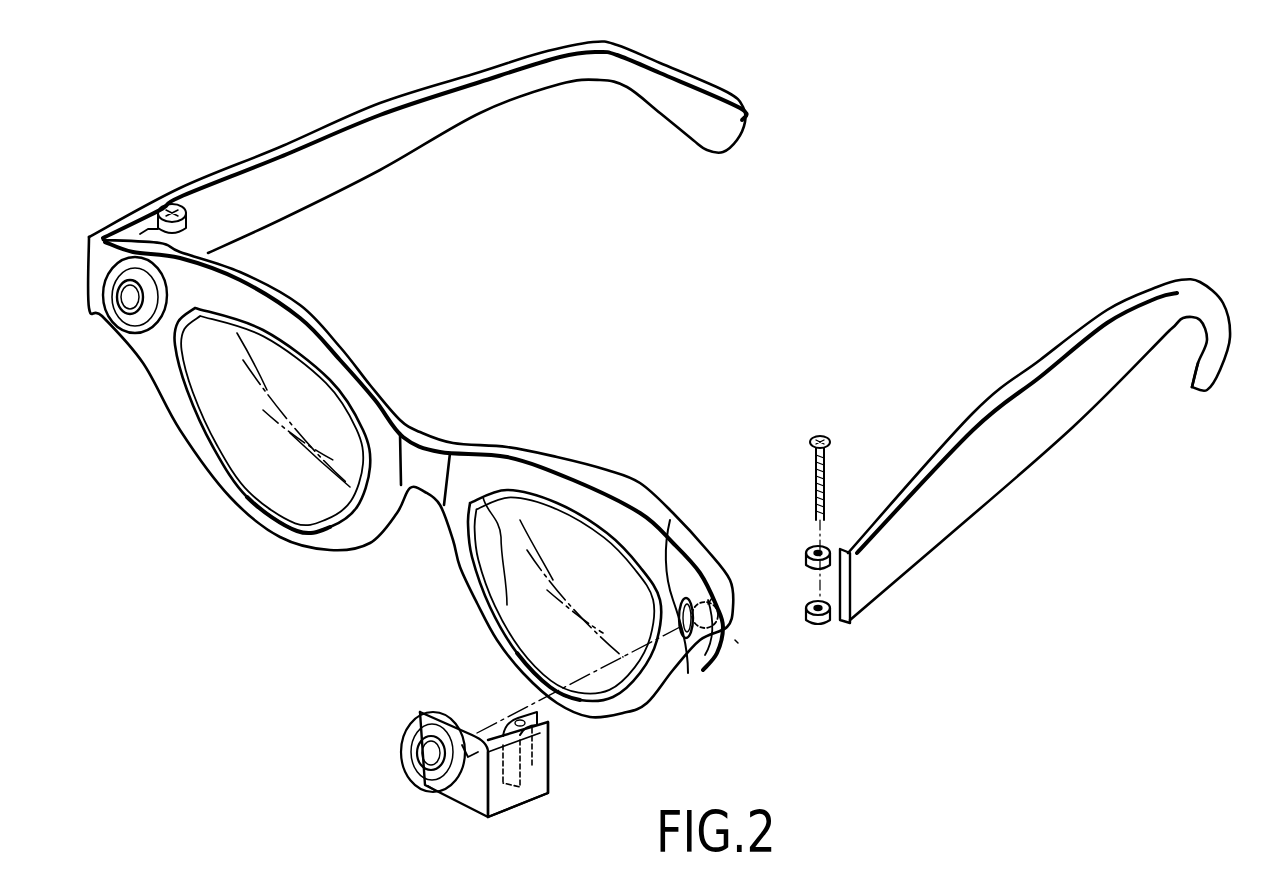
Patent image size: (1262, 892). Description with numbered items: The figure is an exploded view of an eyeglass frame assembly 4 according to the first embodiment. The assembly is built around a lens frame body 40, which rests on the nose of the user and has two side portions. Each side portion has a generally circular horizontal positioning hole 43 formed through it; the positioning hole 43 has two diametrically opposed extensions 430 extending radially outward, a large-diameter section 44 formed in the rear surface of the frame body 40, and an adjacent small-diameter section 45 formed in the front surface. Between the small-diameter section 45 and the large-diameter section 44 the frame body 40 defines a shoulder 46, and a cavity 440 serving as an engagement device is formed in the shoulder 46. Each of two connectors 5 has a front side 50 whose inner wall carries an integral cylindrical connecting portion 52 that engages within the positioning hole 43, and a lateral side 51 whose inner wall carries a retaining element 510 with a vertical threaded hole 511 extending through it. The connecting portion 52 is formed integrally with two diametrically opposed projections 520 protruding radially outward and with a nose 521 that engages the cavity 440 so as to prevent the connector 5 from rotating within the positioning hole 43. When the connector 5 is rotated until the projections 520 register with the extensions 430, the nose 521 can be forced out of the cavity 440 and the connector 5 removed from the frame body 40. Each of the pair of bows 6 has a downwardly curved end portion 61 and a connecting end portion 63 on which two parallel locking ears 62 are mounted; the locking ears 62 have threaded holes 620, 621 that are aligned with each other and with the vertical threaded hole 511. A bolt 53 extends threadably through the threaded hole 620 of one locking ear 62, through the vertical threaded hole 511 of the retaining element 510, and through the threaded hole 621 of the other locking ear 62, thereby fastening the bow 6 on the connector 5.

The eyeglass frame assembly 4 is at (447, 420).
The lens frame body 40 is at (518, 452).
The positioning hole 43 is at (708, 642).
The extension 430 is at (693, 597).
The large-diameter section 44 is at (708, 601).
The cavity 440 is at (737, 642).
The small-diameter section 45 is at (674, 582).
The shoulder 46 is at (719, 614).
The connector 5 is at (540, 809).
The front side 50 is at (468, 788).
The lateral side 51 is at (548, 792).
The retaining element 510 is at (540, 753).
The vertical threaded hole 511 is at (550, 730).
The integral cylindrical connecting portion 52 is at (452, 712).
The projection 520 is at (477, 733).
The nose 521 is at (430, 788).
The bolt 53 is at (830, 472).
The bow 6 is at (983, 427).
The downwardly curved end portion 61 is at (1197, 365).
The locking ear 62 is at (826, 548).
The threaded hole 620 is at (814, 551).
The threaded hole 621 is at (813, 606).
The connecting end portion 63 is at (853, 598).